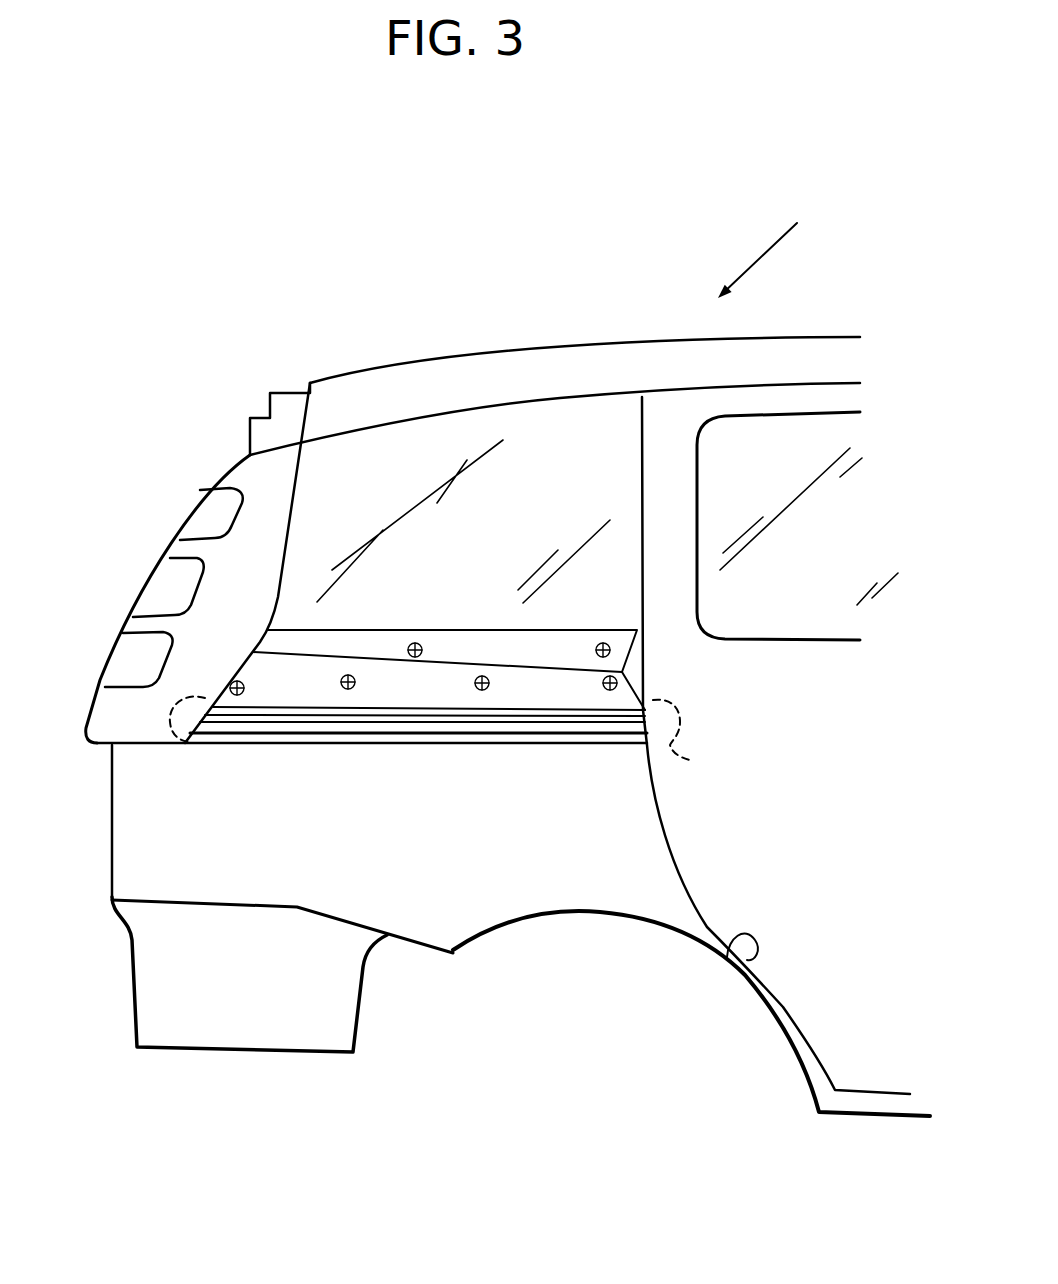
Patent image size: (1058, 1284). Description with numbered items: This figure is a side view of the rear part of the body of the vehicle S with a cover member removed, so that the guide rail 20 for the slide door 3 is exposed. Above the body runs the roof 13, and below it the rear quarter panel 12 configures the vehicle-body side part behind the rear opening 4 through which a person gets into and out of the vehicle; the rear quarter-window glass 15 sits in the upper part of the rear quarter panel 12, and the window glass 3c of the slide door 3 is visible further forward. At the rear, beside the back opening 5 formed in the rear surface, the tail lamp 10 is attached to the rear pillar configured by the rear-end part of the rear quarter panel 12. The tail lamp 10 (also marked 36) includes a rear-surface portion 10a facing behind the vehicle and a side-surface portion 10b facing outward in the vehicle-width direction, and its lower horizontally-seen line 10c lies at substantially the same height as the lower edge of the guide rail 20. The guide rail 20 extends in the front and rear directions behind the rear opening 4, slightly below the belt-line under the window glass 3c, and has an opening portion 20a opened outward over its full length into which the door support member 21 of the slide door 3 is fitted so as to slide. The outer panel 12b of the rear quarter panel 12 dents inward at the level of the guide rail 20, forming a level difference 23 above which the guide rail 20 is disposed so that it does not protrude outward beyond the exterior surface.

The vehicle S is at (820, 222).
The roof 13 is at (556, 343).
The back opening 5 is at (250, 443).
The rear quarter-window glass 15 is at (425, 447).
The window glass 3c is at (783, 447).
The tail lamp 10 is at (205, 550).
The louver vents 36 is at (174, 587).
The rear-surface portion 10a is at (128, 630).
The side-surface portion 10b is at (268, 540).
The lower horizontally-seen line 10c is at (135, 748).
The guide rail 20 is at (427, 707).
The opening portion 20a is at (510, 742).
The level difference 23 is at (300, 742).
The door support member 21 is at (690, 760).
The rear quarter panel 12 is at (470, 883).
The outer panel 12b is at (249, 974).
The slide door 3 is at (843, 973).
The rear opening 4 is at (743, 970).